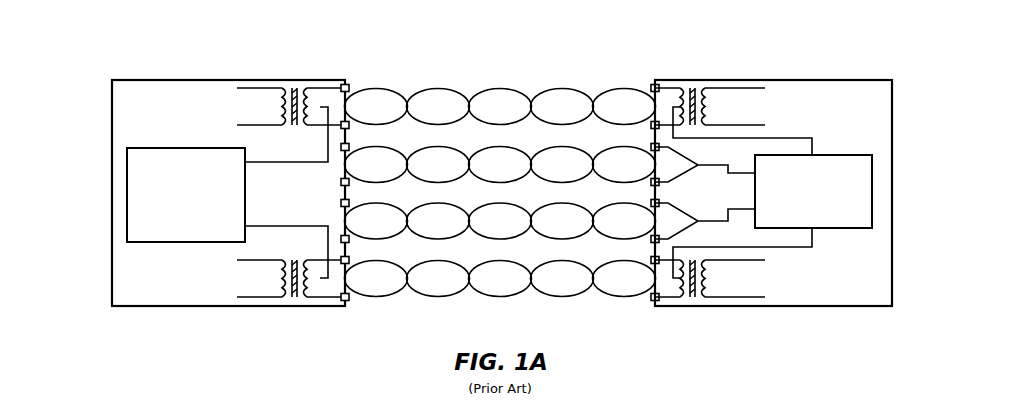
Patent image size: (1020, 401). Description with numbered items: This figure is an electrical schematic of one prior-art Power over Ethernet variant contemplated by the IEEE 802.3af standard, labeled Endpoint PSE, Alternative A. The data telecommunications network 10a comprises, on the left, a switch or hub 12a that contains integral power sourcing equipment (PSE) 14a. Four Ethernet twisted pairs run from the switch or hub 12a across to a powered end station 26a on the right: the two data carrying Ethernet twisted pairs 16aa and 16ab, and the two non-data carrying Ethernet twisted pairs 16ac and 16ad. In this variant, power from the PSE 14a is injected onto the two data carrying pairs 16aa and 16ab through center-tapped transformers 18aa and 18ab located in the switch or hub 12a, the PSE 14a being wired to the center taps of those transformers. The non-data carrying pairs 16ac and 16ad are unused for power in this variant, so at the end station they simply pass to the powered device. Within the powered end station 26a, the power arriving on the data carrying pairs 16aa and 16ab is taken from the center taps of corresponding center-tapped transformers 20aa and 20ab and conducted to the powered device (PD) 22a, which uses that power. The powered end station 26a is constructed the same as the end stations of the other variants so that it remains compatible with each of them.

The data telecommunications network 10a is at (558, 56).
The switch or hub 12a is at (312, 79).
The power sourcing equipment (PSE) 14a is at (127, 193).
The data carrying Ethernet twisted pair 16aa is at (442, 90).
The data carrying Ethernet twisted pair 16ab is at (442, 261).
The non-data carrying Ethernet twisted pair 16ac is at (442, 148).
The non-data carrying Ethernet twisted pair 16ad is at (442, 204).
The center-tapped transformer 18aa is at (319, 86).
The center-tapped transformer 18ab is at (316, 299).
The center-tapped transformer 20aa is at (688, 85).
The center-tapped transformer 20ab is at (688, 299).
The powered device (PD) 22a is at (873, 192).
The powered end station 26a is at (893, 283).